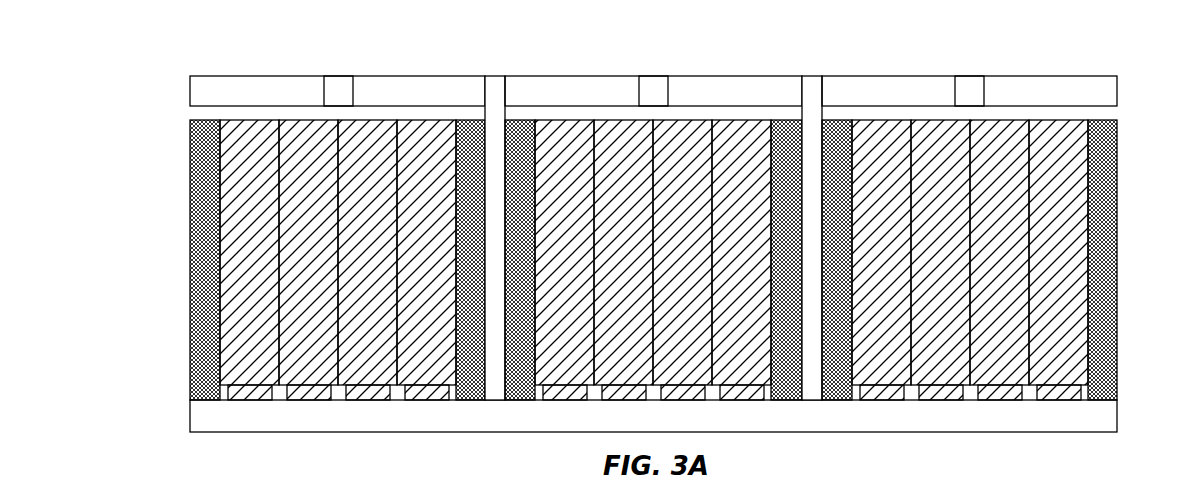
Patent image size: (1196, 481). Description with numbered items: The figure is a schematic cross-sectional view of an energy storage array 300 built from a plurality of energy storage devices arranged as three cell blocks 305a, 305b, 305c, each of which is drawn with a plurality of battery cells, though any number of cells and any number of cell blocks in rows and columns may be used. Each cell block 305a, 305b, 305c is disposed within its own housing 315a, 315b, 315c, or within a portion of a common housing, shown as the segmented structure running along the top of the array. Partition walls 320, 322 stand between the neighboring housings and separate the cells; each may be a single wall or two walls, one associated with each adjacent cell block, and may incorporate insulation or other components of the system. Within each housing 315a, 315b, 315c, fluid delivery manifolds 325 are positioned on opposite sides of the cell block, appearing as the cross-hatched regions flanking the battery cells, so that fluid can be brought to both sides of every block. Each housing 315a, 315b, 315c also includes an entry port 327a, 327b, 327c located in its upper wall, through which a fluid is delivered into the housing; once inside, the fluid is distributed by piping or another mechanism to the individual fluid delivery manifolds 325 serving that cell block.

The energy storage array 300 is at (138, 90).
The first cell block 305a is at (421, 122).
The second cell block 305b is at (736, 122).
The third cell block 305c is at (1058, 122).
The first housing 315a is at (226, 76).
The second housing 315b is at (540, 76).
The third housing 315c is at (861, 76).
The partition wall 320 is at (490, 76).
The partition wall 322 is at (807, 76).
The fluid delivery manifold 325 is at (1118, 217).
The first entry port 327a is at (336, 76).
The second entry port 327b is at (650, 76).
The third entry port 327c is at (970, 76).